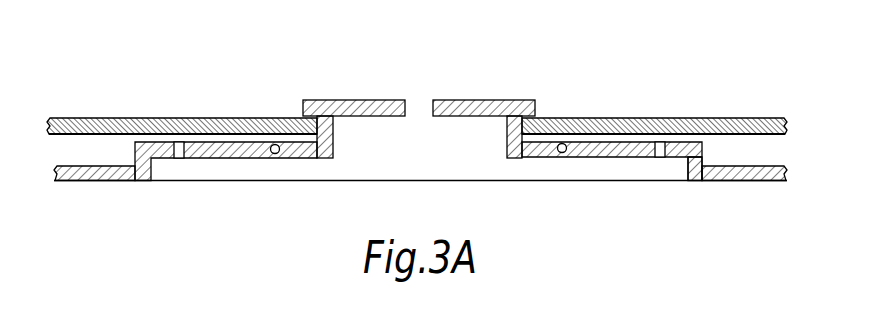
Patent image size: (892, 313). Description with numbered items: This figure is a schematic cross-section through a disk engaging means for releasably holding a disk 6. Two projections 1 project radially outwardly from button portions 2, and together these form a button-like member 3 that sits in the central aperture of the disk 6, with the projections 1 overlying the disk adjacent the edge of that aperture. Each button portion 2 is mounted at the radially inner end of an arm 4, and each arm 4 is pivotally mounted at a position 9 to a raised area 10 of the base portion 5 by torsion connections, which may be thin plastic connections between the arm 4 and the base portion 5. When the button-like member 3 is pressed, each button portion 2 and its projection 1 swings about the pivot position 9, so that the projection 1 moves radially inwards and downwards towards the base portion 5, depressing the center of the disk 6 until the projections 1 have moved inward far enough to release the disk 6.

The projection 1 is at (312, 100).
The button portion 2 is at (384, 146).
The button-like member 3 is at (433, 60).
The arm 4 is at (320, 158).
The base portion 5 is at (75, 173).
The disk 6 is at (109, 124).
The pivot position 9 is at (276, 154).
The raised area 10 is at (164, 160).